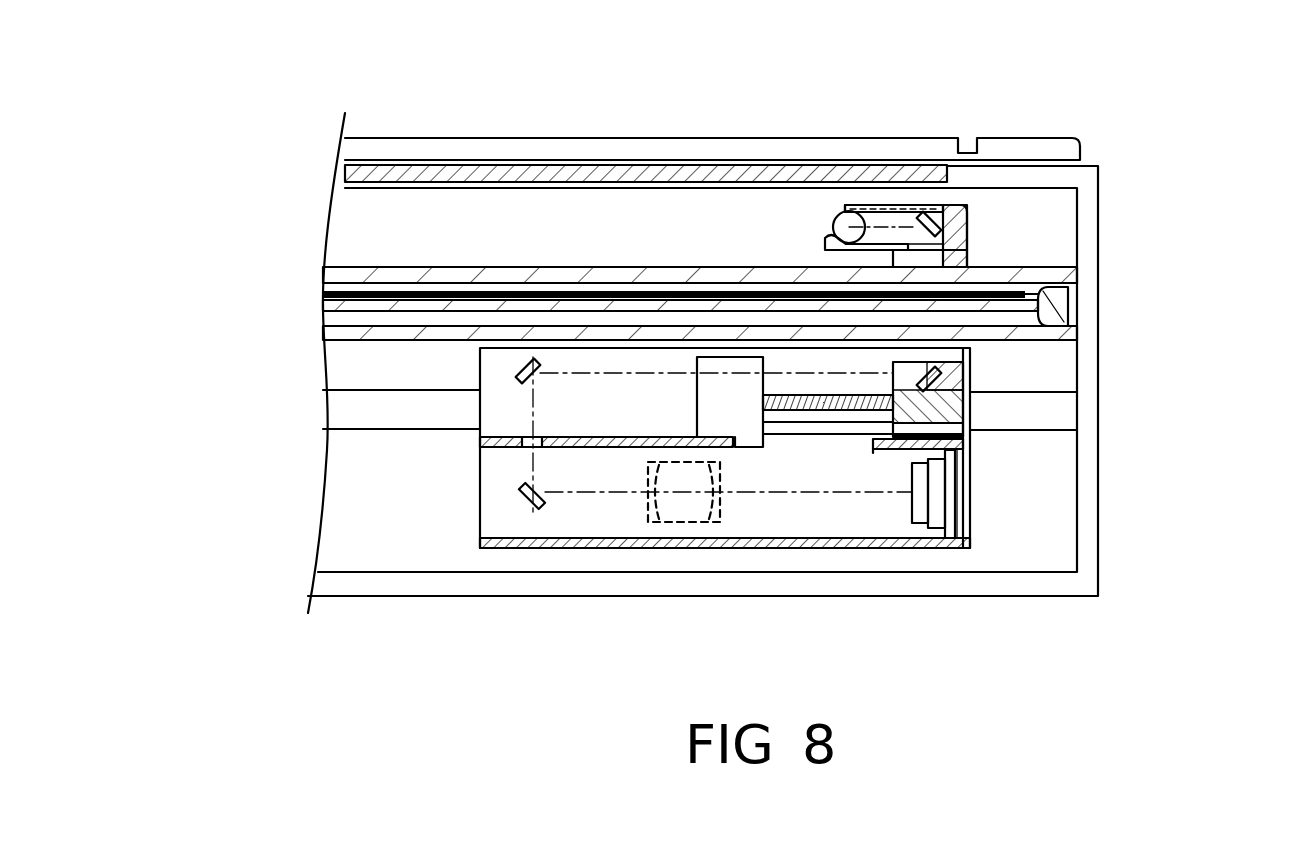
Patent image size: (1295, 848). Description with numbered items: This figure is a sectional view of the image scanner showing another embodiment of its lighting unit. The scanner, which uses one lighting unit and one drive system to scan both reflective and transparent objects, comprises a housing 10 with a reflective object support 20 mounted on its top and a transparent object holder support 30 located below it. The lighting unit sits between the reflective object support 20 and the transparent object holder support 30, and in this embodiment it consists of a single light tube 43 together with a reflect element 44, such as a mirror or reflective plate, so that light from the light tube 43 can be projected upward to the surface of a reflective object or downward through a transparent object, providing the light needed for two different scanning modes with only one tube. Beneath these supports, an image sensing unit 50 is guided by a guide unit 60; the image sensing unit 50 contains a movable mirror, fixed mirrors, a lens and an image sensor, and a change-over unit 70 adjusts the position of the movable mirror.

The housing 10 is at (1090, 252).
The reflective object support 20 is at (322, 159).
The transparent object holder support 30 is at (303, 293).
The light tube 43 is at (843, 214).
The reflect element 44 is at (927, 368).
The image sensing unit 50 is at (773, 518).
The guide unit 60 is at (1033, 405).
The change-over unit 70 is at (823, 458).